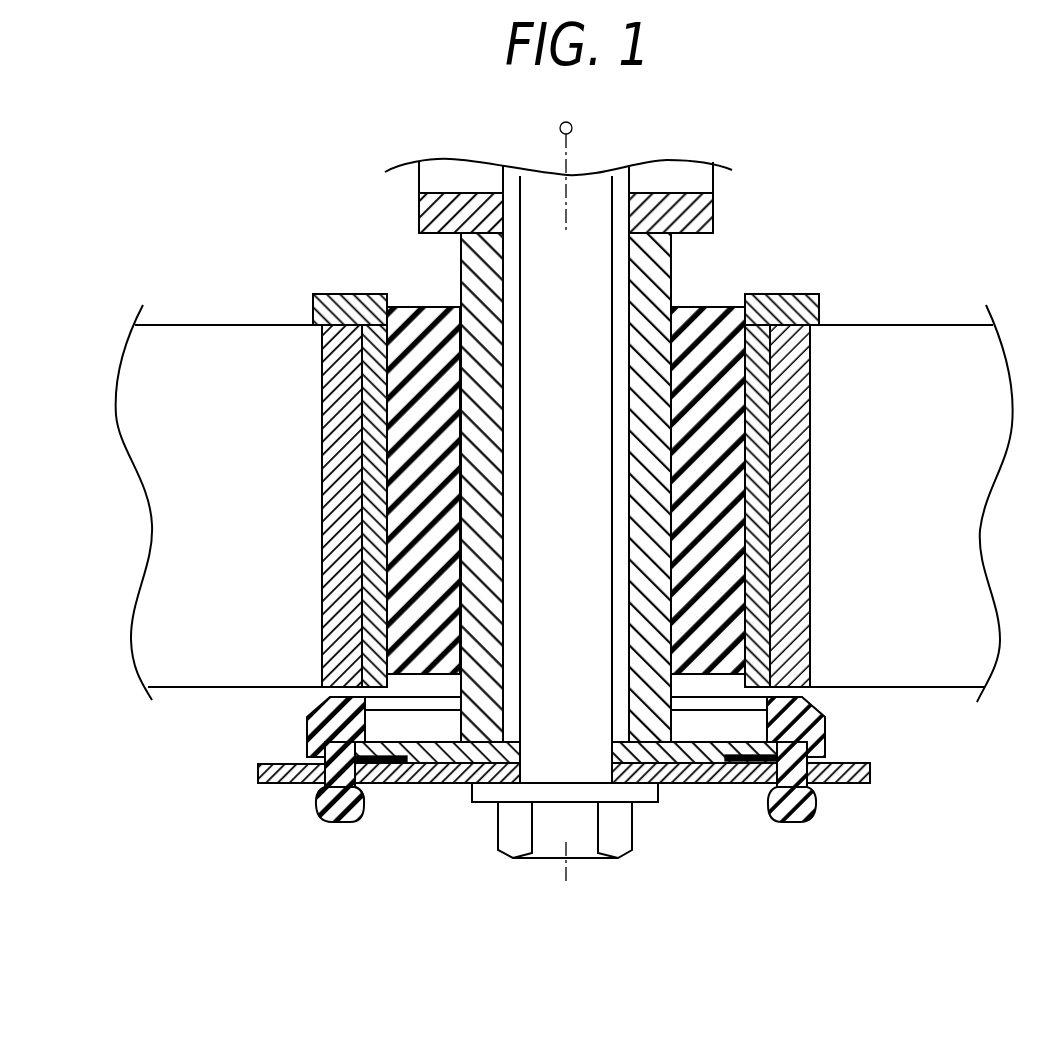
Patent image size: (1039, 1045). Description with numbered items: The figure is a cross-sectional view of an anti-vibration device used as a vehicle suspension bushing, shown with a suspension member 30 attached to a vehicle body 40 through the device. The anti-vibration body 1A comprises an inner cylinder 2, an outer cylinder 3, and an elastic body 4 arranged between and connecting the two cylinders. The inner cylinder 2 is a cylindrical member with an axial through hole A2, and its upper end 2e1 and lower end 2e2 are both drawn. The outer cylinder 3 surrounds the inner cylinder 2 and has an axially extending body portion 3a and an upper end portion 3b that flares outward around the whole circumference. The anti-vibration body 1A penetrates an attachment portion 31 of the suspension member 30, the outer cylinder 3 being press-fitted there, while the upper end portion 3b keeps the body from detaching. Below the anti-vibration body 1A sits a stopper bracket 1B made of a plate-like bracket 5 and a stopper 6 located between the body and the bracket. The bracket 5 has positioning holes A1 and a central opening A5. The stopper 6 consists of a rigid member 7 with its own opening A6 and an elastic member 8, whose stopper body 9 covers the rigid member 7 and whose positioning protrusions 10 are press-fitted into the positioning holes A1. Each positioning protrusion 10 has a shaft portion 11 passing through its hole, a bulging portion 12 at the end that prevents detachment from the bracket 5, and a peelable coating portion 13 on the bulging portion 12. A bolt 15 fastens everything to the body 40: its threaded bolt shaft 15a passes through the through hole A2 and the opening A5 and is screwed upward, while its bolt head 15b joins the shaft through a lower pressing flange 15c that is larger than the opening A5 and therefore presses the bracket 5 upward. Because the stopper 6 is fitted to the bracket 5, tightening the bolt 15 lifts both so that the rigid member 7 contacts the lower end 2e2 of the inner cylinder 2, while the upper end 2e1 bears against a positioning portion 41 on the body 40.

The anti-vibration body 1A is at (536, 456).
The stopper bracket 1B is at (567, 801).
The inner cylinder 2 is at (513, 492).
The upper end of inner cylinder 2e1 is at (480, 233).
The lower end of inner cylinder 2e2 is at (473, 747).
The outer cylinder 3 is at (509, 490).
The body portion 3a is at (373, 452).
The upper end portion 3b is at (323, 308).
The elastic body 4 is at (717, 452).
The bracket 5 is at (686, 775).
The stopper 6 is at (757, 824).
The rigid member 7 is at (703, 756).
The elastic member 8 is at (494, 785).
The stopper body 9 is at (313, 722).
The positioning protrusions 10 is at (269, 807).
The shaft portion 11 is at (320, 779).
The bulging portion 12 is at (332, 797).
The coating portion 13 is at (342, 820).
The bolt 15 is at (525, 557).
The bolt shaft 15a is at (592, 760).
The bolt head 15b is at (548, 898).
The lower pressing flange 15c is at (478, 795).
The suspension member 30 is at (564, 477).
The attachment portion 31 is at (796, 541).
The vehicle body 40 is at (560, 173).
The positioning portion 41 is at (433, 215).
The positioning holes A1 is at (363, 798).
The through hole A2 is at (515, 462).
The opening A5 is at (520, 772).
The opening A6 is at (520, 748).